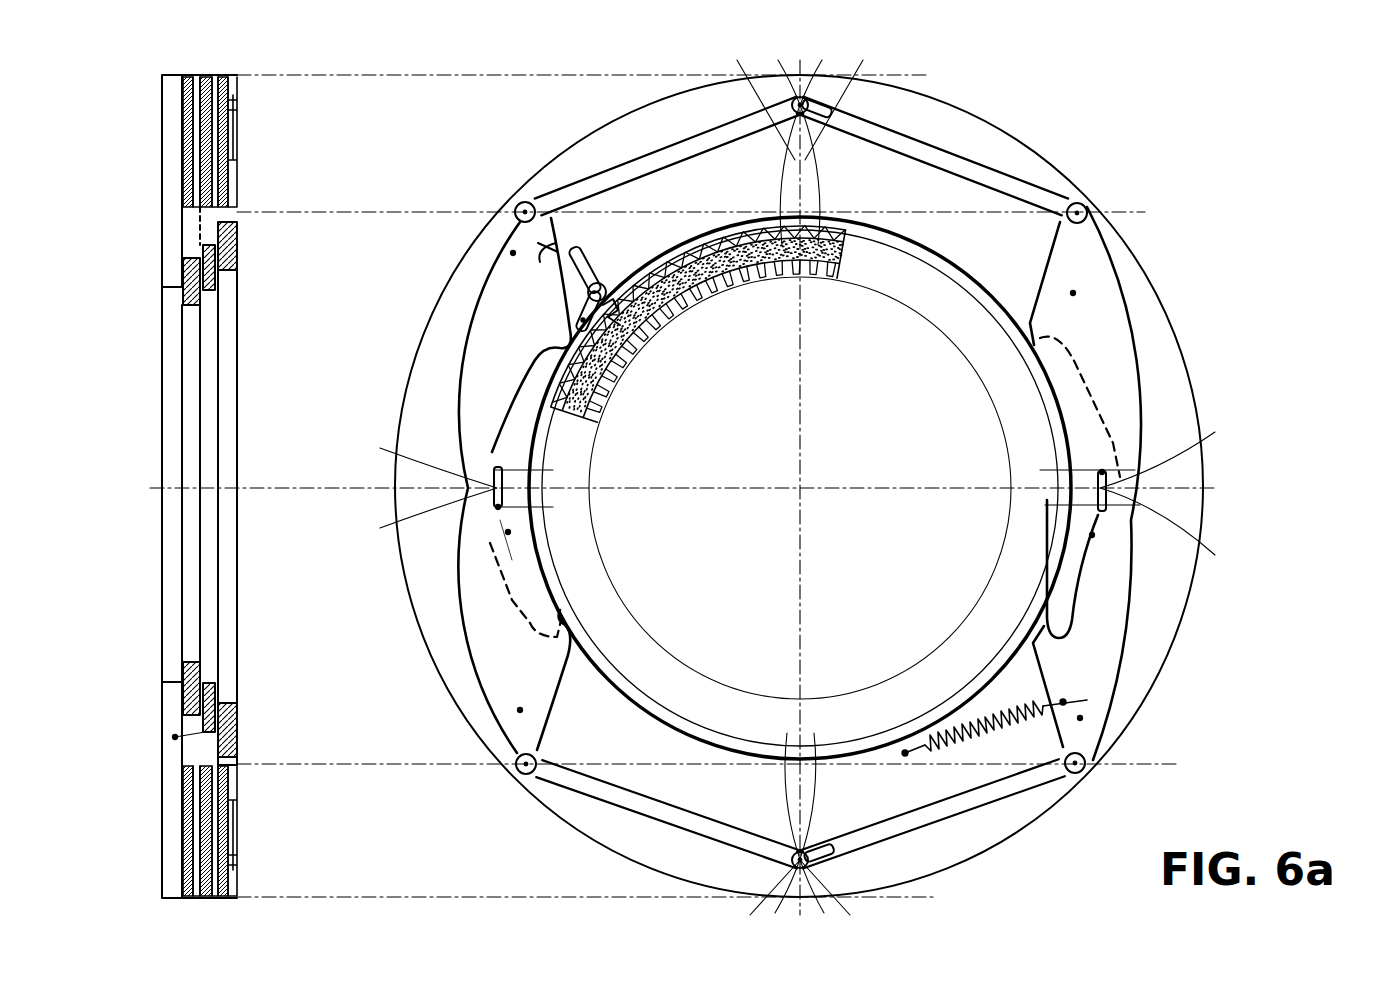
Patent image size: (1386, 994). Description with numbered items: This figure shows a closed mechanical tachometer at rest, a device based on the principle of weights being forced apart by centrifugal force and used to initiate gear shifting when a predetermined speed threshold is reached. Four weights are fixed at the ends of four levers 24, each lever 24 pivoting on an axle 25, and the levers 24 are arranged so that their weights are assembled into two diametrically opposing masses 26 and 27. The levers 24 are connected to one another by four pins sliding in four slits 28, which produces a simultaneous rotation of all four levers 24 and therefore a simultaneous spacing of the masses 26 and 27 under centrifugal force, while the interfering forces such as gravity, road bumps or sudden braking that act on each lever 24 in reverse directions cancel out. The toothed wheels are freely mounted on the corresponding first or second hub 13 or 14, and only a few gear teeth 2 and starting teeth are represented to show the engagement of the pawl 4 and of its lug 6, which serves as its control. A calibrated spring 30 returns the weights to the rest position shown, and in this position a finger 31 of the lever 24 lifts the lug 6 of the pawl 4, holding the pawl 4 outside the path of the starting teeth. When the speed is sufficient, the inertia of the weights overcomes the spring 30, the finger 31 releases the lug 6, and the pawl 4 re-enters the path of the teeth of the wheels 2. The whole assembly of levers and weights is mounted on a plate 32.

The gear teeth 2 is at (557, 382).
The pawl 4 is at (583, 312).
The lug 6 is at (590, 262).
The first hub 13 is at (398, 641).
The second hub 14 is at (368, 705).
The lever 24 is at (237, 160).
The axle 25 is at (1085, 205).
The mass 26 is at (508, 532).
The mass 27 is at (1092, 535).
The slit 28 is at (492, 482).
The calibrated spring 30 is at (978, 745).
The finger 31 is at (552, 242).
The plate 32 is at (470, 290).